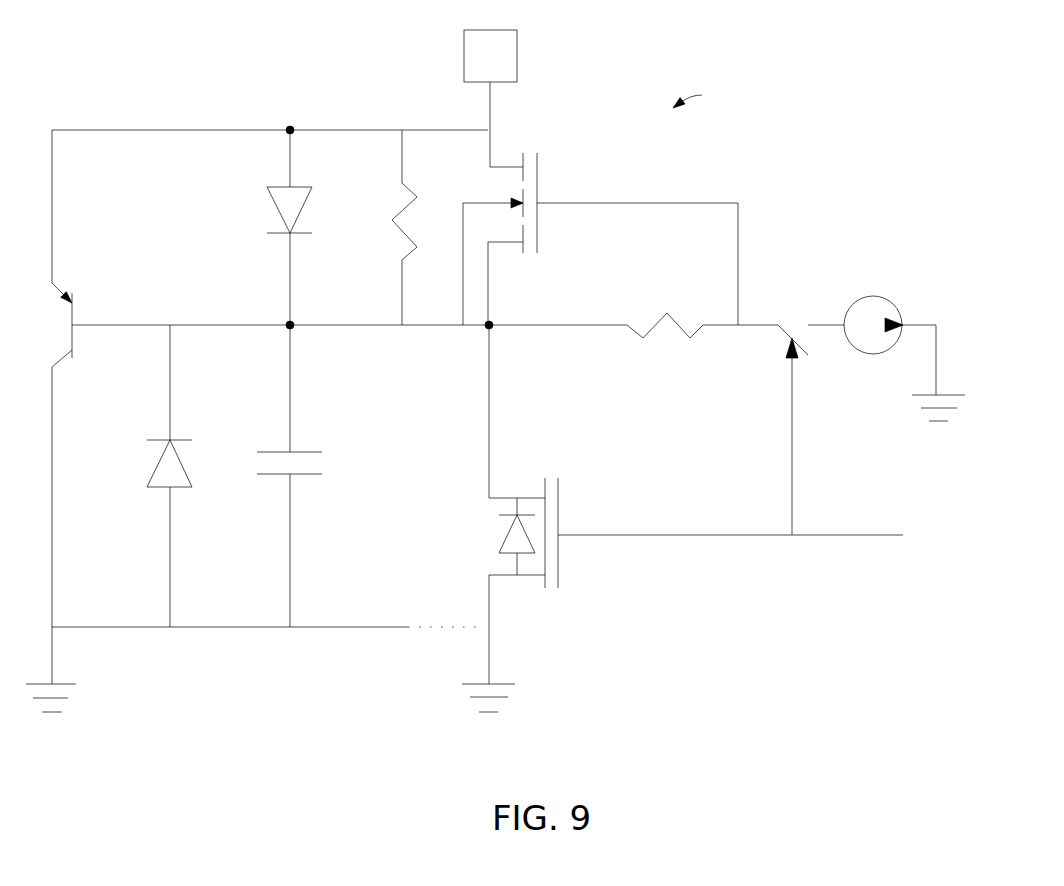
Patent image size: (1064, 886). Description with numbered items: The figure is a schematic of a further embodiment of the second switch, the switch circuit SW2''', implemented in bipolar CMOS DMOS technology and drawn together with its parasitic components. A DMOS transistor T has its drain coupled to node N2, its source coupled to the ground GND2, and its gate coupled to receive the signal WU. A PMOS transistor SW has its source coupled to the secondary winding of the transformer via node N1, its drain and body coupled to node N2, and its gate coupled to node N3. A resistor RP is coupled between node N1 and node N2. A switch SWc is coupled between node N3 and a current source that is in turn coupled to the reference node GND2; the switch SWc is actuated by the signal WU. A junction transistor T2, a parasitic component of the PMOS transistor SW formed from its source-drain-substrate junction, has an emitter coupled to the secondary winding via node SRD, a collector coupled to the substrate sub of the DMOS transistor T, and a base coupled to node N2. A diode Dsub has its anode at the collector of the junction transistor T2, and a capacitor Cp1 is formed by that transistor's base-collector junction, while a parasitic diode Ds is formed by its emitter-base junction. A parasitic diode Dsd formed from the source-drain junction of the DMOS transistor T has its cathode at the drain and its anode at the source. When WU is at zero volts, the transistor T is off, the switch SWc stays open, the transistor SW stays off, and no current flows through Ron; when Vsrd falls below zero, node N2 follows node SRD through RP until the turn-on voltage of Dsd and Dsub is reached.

The node N1 is at (270, 116).
The node N2 is at (329, 341).
The node N3 is at (515, 409).
The junction transistor T2 is at (111, 378).
The parasitic diode Ds is at (270, 227).
The diode Dsub is at (140, 476).
The capacitor Cp1 is at (319, 476).
The substrate sub is at (254, 669).
The resistor RP is at (385, 227).
The node SRD is at (518, 98).
The PMOS transistor SW is at (600, 239).
The switch circuit SW2''' is at (725, 99).
The parasitic diode Dsd is at (492, 536).
The DMOS transistor T is at (537, 581).
The signal WU is at (730, 436).
The on-resistance Ron is at (613, 344).
The switch SWc is at (791, 326).
The ground GND2 is at (750, 553).